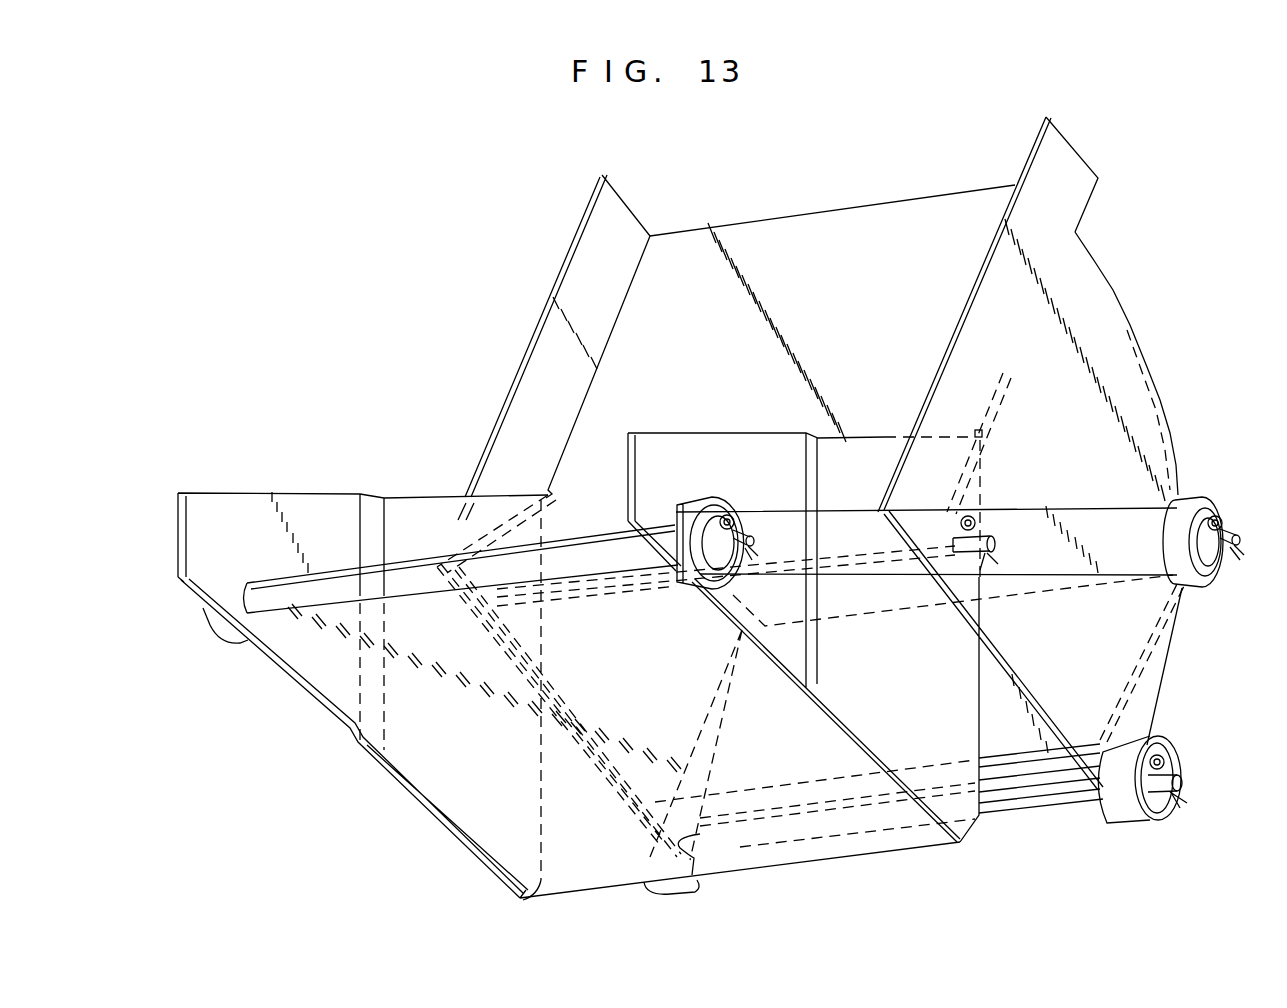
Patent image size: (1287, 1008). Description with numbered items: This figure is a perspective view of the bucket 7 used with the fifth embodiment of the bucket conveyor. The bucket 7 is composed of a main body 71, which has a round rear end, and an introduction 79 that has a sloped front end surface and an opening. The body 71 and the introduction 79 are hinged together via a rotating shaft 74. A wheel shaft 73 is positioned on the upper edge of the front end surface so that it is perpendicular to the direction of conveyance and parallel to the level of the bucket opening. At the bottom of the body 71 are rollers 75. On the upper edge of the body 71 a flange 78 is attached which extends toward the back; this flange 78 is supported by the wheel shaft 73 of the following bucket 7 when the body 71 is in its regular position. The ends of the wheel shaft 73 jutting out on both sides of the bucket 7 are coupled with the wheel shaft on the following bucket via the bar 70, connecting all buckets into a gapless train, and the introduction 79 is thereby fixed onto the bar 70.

The bucket 7 is at (450, 316).
The bar 70 is at (1115, 553).
The main body 71 is at (1115, 360).
The wheel shaft 73 is at (337, 588).
The rotating shaft 74 is at (998, 535).
The rollers 75 is at (1158, 808).
The flange 78 is at (1065, 160).
The introduction 79 is at (497, 778).